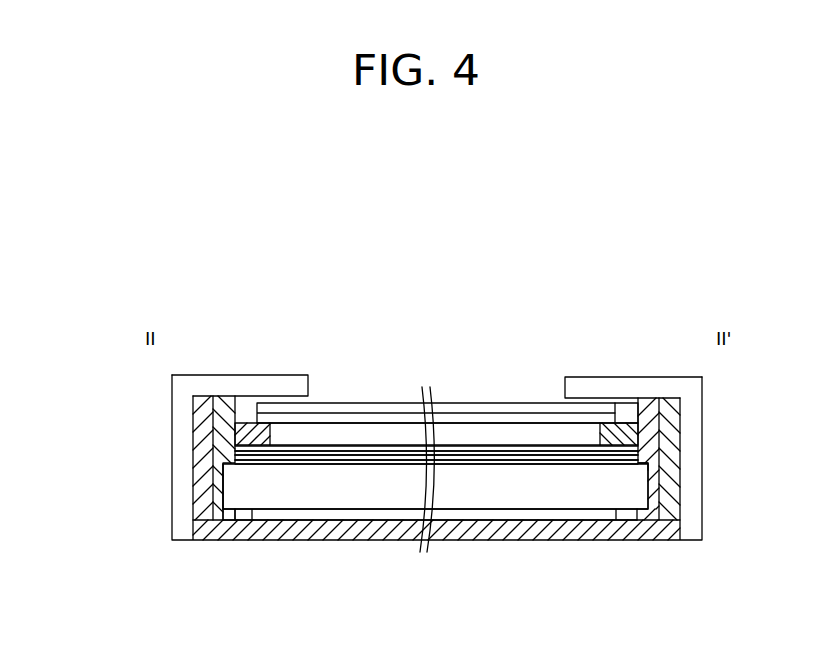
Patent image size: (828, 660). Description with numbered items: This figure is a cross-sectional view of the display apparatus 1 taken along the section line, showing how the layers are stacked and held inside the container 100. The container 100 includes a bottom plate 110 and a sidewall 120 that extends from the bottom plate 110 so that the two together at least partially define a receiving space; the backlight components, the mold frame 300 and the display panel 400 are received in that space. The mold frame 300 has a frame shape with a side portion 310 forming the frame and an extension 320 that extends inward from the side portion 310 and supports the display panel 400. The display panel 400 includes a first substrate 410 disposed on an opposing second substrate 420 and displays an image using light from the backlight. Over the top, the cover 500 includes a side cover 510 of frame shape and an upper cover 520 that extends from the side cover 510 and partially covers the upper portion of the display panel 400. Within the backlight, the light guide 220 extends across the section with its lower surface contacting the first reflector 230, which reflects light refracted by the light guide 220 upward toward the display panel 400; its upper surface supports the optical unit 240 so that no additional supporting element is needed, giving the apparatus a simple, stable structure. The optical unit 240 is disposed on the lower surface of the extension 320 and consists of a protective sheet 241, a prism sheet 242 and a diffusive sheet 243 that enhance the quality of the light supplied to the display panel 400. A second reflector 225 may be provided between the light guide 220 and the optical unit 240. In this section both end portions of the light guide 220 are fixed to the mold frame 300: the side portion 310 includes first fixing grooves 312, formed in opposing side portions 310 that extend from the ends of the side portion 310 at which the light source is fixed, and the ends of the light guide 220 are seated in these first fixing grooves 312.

The display apparatus 1 is at (390, 272).
The container 100 is at (96, 510).
The bottom plate 110 is at (224, 548).
The sidewall 120 is at (203, 522).
The light guide 220 is at (368, 494).
The second reflector 225 is at (648, 464).
The first reflector 230 is at (317, 512).
The optical unit 240 is at (567, 325).
The protective sheet 241 is at (457, 447).
The prism sheet 242 is at (500, 452).
The diffusive sheet 243 is at (542, 457).
The mold frame 300 is at (96, 424).
The side portion 310 is at (234, 456).
The first fixing grooves 312 is at (223, 484).
The extension 320 is at (240, 430).
The display panel 400 is at (665, 325).
The first substrate 410 is at (615, 410).
The second substrate 420 is at (582, 408).
The cover 500 is at (96, 358).
The side cover 510 is at (177, 400).
The upper cover 520 is at (190, 375).